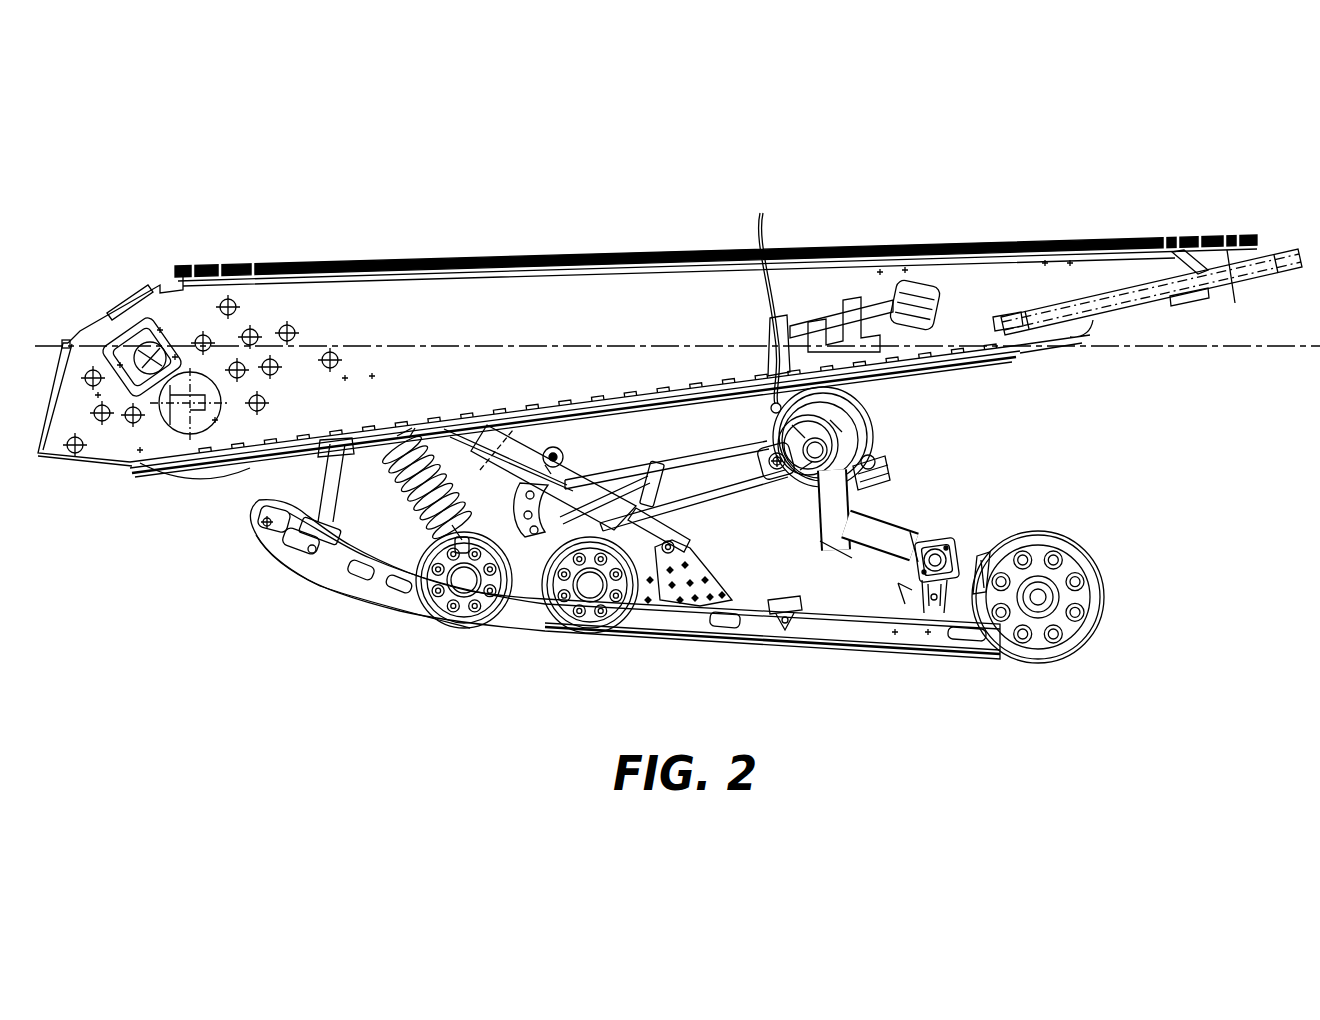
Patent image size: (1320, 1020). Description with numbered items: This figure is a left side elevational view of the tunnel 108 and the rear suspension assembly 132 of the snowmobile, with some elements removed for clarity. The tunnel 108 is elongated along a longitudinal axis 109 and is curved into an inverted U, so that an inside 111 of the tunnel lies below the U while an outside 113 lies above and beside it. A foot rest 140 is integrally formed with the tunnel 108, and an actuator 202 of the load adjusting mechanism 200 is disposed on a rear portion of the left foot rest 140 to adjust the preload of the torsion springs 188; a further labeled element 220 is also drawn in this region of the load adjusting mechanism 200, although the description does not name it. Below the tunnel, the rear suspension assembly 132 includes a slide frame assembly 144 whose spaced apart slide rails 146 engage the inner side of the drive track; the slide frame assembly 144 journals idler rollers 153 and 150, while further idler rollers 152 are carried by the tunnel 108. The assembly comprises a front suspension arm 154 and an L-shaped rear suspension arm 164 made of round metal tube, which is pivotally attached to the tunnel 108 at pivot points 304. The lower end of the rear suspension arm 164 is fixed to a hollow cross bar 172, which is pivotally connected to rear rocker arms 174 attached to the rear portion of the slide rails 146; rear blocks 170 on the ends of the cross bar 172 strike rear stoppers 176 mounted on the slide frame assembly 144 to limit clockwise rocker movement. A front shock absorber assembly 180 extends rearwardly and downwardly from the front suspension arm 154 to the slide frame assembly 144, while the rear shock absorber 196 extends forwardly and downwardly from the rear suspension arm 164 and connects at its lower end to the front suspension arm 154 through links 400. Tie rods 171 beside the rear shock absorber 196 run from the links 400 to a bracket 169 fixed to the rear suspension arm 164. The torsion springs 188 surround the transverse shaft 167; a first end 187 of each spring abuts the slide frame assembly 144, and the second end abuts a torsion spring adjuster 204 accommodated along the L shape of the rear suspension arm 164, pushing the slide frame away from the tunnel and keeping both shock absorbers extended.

The tunnel 108 is at (552, 256).
The longitudinal axis 109 is at (46, 347).
The outside of the tunnel 113 is at (874, 186).
The inside of the tunnel 111 is at (1151, 381).
The foot rest 140 is at (458, 418).
The pivot points 304 is at (763, 298).
The actuator 202 is at (762, 337).
The adjuster assembly 220 is at (895, 290).
The idler rollers 153 is at (885, 356).
The load adjusting mechanism 200 is at (712, 364).
The slide frame assembly 144 is at (840, 645).
The idler rollers 152 is at (572, 648).
The idler rollers 150 is at (1071, 533).
The front shock absorber assembly 180 is at (394, 461).
The front suspension arm 154 is at (468, 450).
The links 400 is at (583, 456).
The rear shock absorber 196 is at (716, 453).
The torsion springs 188 is at (755, 497).
The tie rods 171 is at (684, 474).
The rear suspension assembly 132 is at (896, 410).
The bracket 169 is at (797, 493).
The transverse shaft 167 is at (868, 429).
The torsion spring adjuster 204 is at (893, 507).
The rear suspension arm 164 is at (919, 538).
The rear blocks 170 is at (940, 600).
The rear rocker arms 174 is at (898, 582).
The rear stoppers 176 is at (980, 552).
The hollow cross bar 172 is at (966, 562).
The first end of torsion spring 187 is at (674, 611).
The slide rails 146 is at (715, 628).